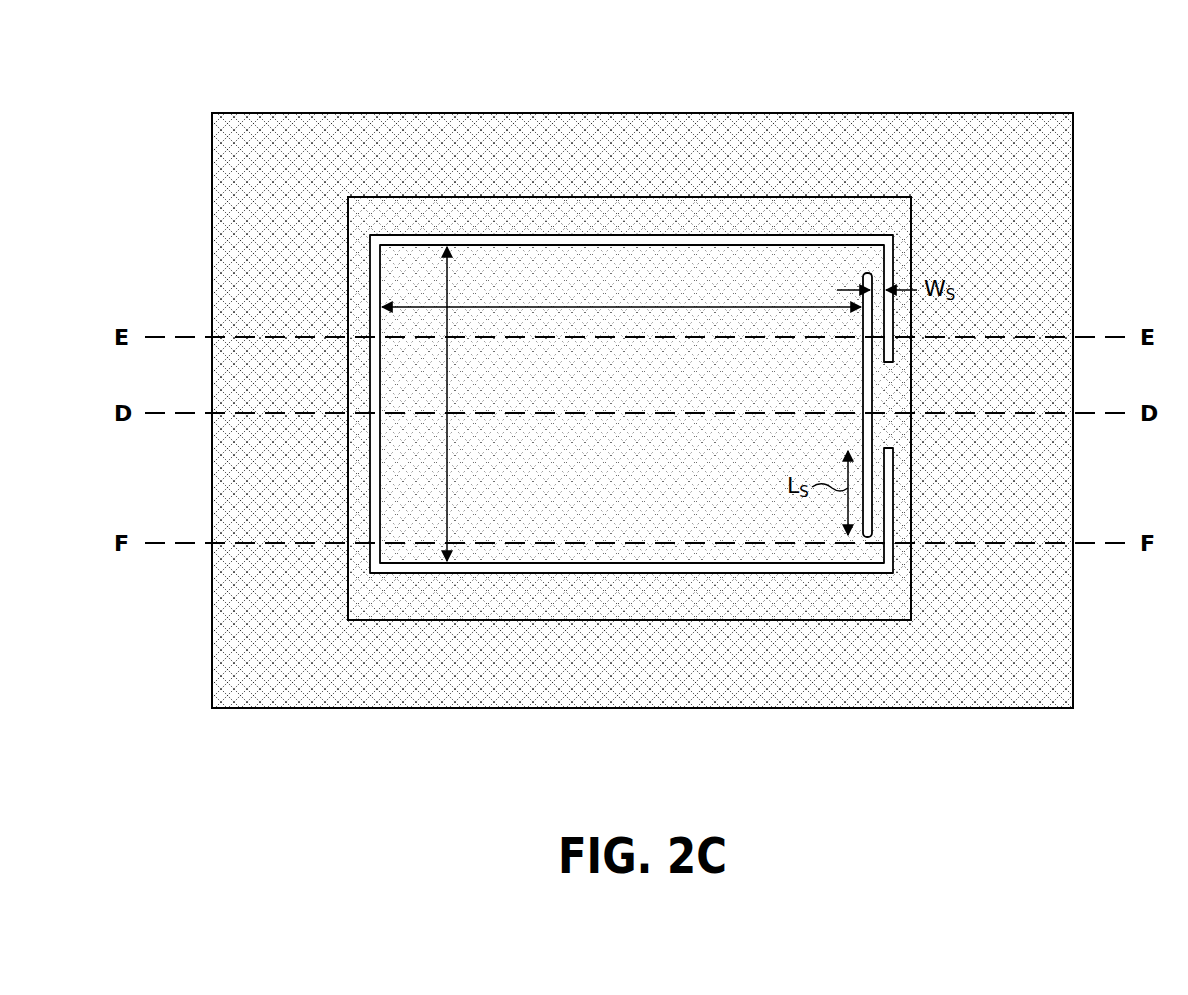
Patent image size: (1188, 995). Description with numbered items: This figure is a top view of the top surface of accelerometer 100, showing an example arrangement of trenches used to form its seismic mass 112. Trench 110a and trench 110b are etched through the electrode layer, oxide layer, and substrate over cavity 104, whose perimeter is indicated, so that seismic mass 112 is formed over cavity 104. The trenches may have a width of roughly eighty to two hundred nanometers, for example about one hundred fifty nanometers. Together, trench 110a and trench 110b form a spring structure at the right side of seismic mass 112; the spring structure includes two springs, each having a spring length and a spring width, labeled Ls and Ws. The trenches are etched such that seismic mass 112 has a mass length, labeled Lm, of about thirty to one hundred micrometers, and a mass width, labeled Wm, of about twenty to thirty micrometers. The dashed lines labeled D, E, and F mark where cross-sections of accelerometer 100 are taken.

The accelerometer 100 is at (188, 46).
The cavity 104 is at (554, 197).
The trench 110a is at (372, 262).
The trench 110b is at (862, 430).
The seismic mass 112 is at (632, 404).